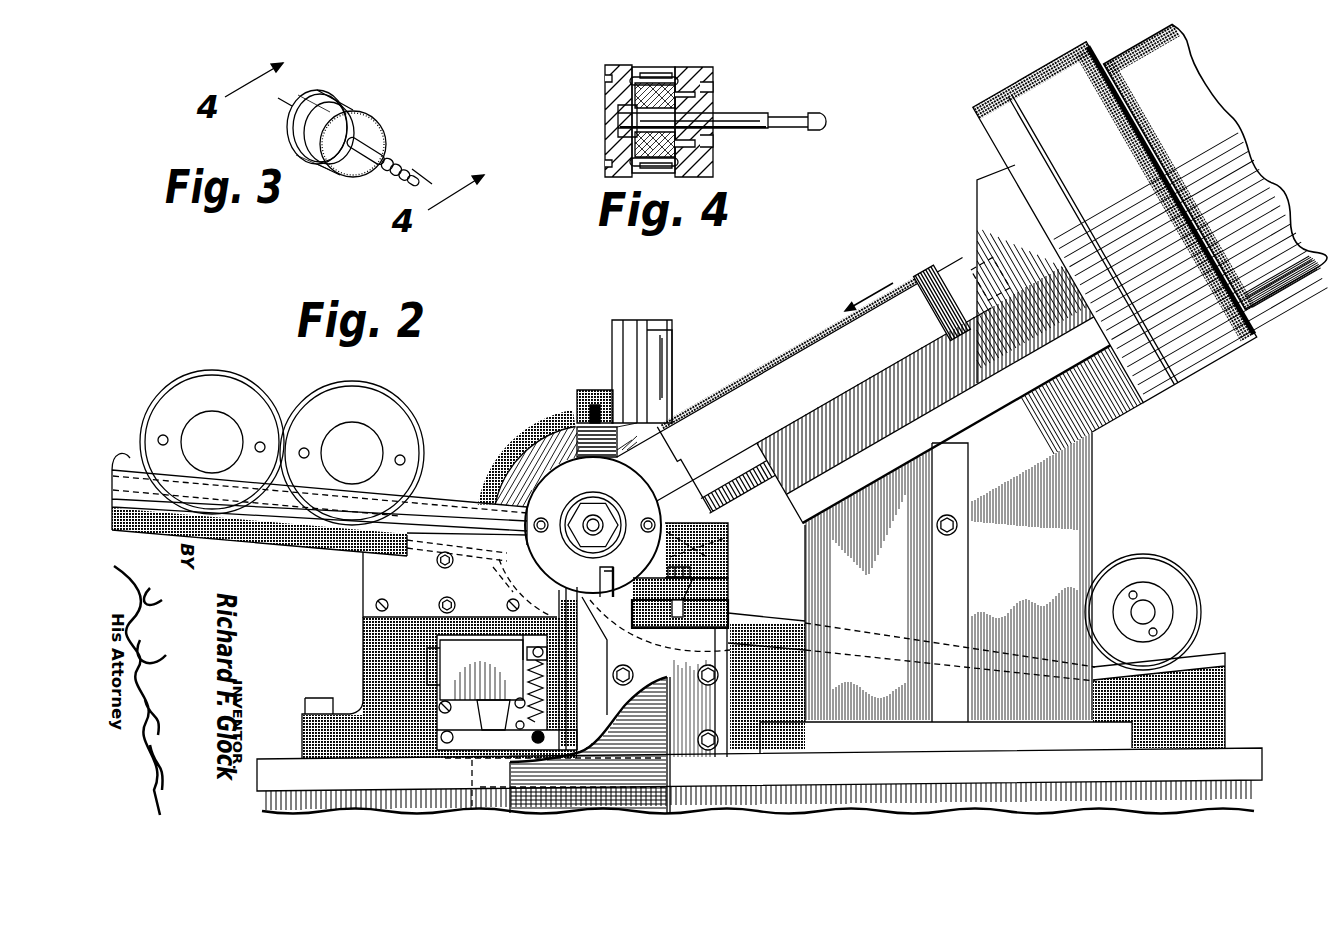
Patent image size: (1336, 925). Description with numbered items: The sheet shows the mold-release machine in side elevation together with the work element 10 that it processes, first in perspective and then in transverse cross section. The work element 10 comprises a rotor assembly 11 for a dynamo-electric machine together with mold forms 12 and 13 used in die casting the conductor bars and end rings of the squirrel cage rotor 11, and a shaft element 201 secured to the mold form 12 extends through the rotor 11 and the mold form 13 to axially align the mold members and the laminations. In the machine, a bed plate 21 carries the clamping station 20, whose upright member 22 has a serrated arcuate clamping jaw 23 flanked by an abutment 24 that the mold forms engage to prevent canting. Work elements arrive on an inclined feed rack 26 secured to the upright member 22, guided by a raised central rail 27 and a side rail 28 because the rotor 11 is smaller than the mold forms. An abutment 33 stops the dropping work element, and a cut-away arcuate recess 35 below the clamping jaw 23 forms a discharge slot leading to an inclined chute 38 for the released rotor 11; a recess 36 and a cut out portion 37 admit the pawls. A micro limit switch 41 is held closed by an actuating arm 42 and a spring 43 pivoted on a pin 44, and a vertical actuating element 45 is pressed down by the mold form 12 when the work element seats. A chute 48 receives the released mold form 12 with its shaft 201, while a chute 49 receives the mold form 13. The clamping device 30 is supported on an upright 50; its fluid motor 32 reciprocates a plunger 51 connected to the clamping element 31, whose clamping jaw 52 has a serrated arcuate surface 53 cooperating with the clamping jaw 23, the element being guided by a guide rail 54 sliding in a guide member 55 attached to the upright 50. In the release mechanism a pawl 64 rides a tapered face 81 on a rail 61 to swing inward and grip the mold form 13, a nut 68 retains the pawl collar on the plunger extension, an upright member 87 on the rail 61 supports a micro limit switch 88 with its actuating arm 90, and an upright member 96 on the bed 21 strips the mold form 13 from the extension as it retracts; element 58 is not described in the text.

In FIG. 3, the work element 10 is at (340, 93).
In FIG. 4, the work element 10 is at (722, 138).
In FIG. 2, the work element 10 is at (210, 372).
In FIG. 3, the rotor assembly 11 is at (307, 127).
In FIG. 4, the rotor assembly 11 is at (652, 67).
In FIG. 2, the rotor assembly 11 is at (1177, 563).
In FIG. 3, the mold form 12 is at (323, 92).
In FIG. 4, the mold form 12 is at (607, 96).
In FIG. 2, the mold form 12 is at (182, 397).
In FIG. 3, the mold form 13 is at (367, 127).
In FIG. 4, the mold form 13 is at (700, 81).
In FIG. 3, the shaft element 201 is at (384, 148).
In FIG. 4, the shaft element 201 is at (757, 114).
In FIG. 2, the clamping station 20 is at (520, 496).
In FIG. 2, the bed plate 21 is at (282, 767).
In FIG. 2, the upright member 22 is at (375, 668).
In FIG. 2, the clamping jaw 23 is at (545, 575).
In FIG. 2, the abutment 24 is at (373, 592).
In FIG. 2, the inclined feed rack 26 is at (300, 533).
In FIG. 2, the raised rail 27 is at (122, 477).
In FIG. 2, the side rail 28 is at (462, 498).
In FIG. 2, the clamping device 30 is at (962, 230).
In FIG. 2, the clamping element 31 is at (770, 371).
In FIG. 2, the fluid motor 32 is at (1148, 55).
In FIG. 2, the abutment 33 is at (730, 580).
In FIG. 2, the arcuate recess 35 is at (641, 650).
In FIG. 2, the recess 36 is at (497, 582).
In FIG. 2, the cut out portion 37 is at (714, 538).
In FIG. 2, the inclined chute 38 is at (1205, 658).
In FIG. 2, the micro limit switch 41 is at (453, 688).
In FIG. 2, the actuating arm 42 is at (446, 735).
In FIG. 2, the spring 43 is at (554, 642).
In FIG. 2, the pin 44 is at (447, 750).
In FIG. 2, the vertical actuating element 45 is at (575, 690).
In FIG. 2, the chute 48 is at (655, 733).
In FIG. 2, the chute 49 is at (473, 801).
In FIG. 2, the upright 50 is at (1075, 500).
In FIG. 2, the plunger 51 is at (998, 250).
In FIG. 2, the clamping jaw 52 is at (653, 448).
In FIG. 2, the arcuate surface 53 is at (627, 482).
In FIG. 2, the guide rail 54 is at (742, 478).
In FIG. 2, the guide member 55 is at (830, 400).
In FIG. 2, the collar 58 is at (543, 448).
In FIG. 2, the rail 61 is at (607, 390).
In FIG. 2, the pawl 64 is at (581, 440).
In FIG. 2, the nut 68 is at (575, 512).
In FIG. 2, the tapered face 81 is at (586, 396).
In FIG. 2, the upright member 87 is at (612, 328).
In FIG. 2, the micro limit switch 88 is at (670, 370).
In FIG. 2, the actuating arm 90 is at (657, 408).
In FIG. 2, the upright member 96 is at (600, 583).